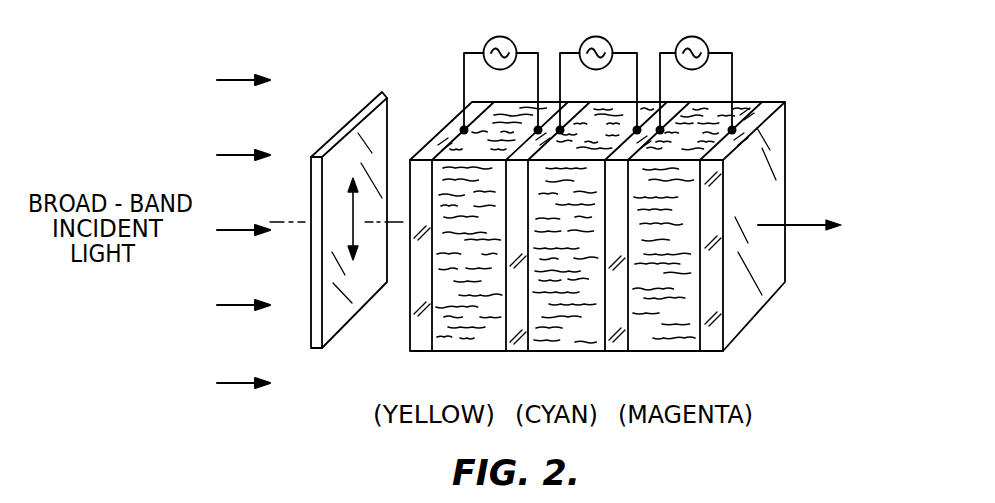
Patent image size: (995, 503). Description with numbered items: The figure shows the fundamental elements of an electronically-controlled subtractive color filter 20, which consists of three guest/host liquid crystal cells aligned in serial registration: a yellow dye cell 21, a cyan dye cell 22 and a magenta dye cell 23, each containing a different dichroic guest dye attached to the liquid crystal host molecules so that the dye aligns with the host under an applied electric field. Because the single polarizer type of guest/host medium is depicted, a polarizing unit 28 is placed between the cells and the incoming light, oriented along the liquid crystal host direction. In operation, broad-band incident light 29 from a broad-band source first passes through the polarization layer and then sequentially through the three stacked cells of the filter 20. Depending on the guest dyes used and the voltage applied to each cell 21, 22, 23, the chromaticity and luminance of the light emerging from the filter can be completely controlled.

The electronically-controlled subtractive color filter 20 is at (631, 216).
The yellow dye cell 21 is at (463, 352).
The cyan dye cell 22 is at (578, 352).
The magenta dye cell 23 is at (663, 352).
The polarizer 28 is at (382, 92).
The broad-band incident light 29 is at (237, 80).